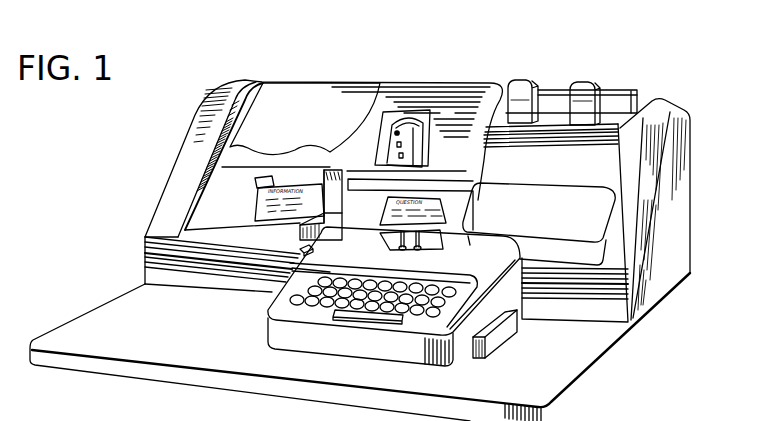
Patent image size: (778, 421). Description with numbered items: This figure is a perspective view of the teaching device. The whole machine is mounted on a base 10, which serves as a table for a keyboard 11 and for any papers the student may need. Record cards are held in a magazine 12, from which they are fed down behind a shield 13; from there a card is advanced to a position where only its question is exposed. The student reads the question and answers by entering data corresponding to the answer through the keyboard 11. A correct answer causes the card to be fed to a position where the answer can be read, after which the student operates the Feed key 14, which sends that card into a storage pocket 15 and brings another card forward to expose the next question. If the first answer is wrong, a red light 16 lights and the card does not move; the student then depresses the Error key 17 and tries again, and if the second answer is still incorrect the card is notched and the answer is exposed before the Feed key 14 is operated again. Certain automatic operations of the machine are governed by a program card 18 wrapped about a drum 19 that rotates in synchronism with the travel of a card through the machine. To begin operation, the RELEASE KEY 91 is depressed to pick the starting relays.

The base 10 is at (603, 360).
The keyboard 11 is at (265, 339).
The magazine 12 is at (624, 74).
The shield 13 is at (545, 219).
The Feed key 14 is at (437, 316).
The storage pocket 15 is at (305, 125).
The red light 16 is at (300, 252).
The Error key 17 is at (313, 276).
The program card 18 is at (397, 131).
The drum 19 is at (413, 120).
The RELEASE KEY 91 is at (455, 295).